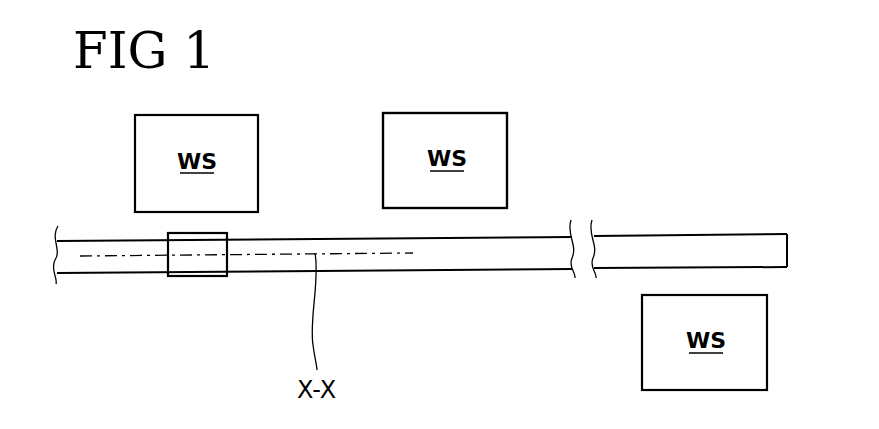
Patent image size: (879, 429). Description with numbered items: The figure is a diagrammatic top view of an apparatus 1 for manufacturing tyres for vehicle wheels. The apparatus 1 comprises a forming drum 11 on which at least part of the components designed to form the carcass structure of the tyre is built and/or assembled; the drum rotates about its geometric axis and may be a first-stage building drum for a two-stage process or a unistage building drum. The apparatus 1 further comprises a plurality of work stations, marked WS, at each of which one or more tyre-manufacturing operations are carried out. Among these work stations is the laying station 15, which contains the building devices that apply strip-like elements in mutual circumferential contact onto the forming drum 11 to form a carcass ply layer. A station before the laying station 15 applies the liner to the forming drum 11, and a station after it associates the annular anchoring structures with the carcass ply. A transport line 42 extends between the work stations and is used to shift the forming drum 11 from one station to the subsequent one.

The apparatus for manufacturing tyres 1 is at (624, 71).
The forming drum 11 is at (190, 267).
The laying station 15 is at (514, 158).
The transport line 42 is at (488, 274).